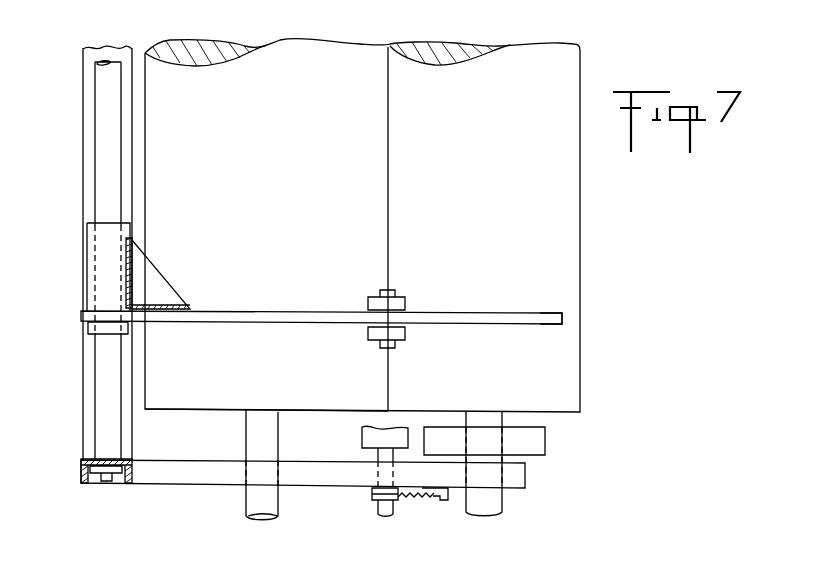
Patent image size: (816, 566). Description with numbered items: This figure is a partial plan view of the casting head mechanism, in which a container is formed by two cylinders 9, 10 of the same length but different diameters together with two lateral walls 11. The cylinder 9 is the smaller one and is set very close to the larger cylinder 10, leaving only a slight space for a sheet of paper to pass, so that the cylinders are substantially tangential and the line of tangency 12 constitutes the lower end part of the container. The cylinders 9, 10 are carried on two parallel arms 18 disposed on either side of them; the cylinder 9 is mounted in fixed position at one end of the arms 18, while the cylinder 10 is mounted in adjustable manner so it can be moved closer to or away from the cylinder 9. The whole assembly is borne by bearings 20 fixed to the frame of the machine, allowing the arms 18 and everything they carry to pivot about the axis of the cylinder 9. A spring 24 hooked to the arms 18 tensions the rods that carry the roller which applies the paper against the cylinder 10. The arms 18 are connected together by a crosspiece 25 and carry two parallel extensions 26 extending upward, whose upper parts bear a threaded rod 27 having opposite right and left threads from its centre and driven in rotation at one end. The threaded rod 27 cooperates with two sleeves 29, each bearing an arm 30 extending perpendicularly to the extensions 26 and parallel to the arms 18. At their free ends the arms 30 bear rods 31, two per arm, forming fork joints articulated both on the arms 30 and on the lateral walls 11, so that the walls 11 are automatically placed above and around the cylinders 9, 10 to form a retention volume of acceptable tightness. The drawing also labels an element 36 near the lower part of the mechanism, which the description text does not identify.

The cylinder 9 is at (555, 385).
The cylinder 10 is at (201, 392).
The lateral wall 11 is at (524, 320).
The line of tangency 12 is at (375, 500).
The arm 18 is at (350, 470).
The bearing 20 is at (535, 443).
The spring 24 is at (418, 500).
The crosspiece 25 is at (90, 381).
The extension 26 is at (81, 469).
The threaded rod 27 is at (103, 192).
The sleeve 29 is at (103, 263).
The arm 30 is at (297, 323).
The rod 31 is at (405, 333).
The knob 36 is at (362, 434).